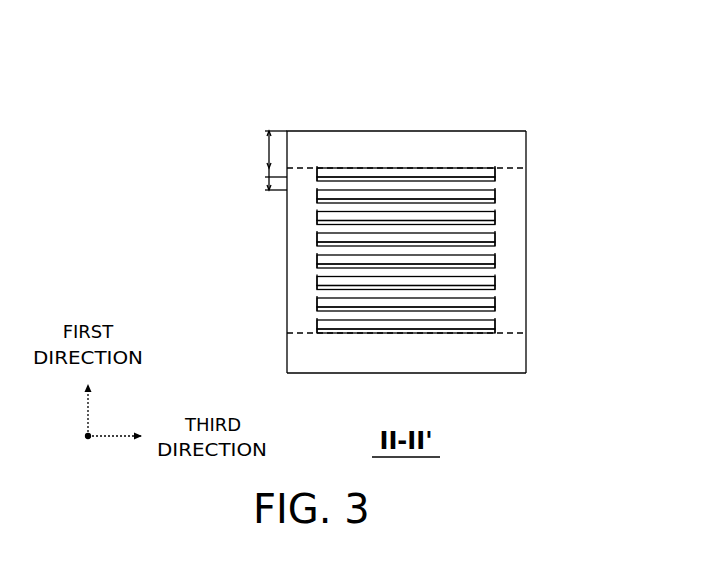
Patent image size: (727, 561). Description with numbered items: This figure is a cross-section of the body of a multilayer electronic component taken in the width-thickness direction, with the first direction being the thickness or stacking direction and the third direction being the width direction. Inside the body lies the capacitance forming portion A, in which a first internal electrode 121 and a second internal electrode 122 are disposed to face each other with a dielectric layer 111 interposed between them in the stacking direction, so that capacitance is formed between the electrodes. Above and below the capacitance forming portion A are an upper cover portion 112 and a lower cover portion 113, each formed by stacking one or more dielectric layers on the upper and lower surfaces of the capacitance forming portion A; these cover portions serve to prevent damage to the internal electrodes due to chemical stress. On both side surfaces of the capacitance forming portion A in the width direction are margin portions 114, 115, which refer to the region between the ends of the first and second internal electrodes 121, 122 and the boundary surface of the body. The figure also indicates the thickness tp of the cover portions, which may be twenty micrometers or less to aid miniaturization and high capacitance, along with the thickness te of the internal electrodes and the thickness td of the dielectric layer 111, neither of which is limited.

The upper cover portion 112 is at (413, 148).
The first internal electrode 121 is at (495, 169).
The dielectric layer 111 is at (495, 180).
The second internal electrode 122 is at (495, 193).
The margin portion 115 is at (517, 277).
The lower cover portion 113 is at (517, 352).
The margin portion 114 is at (300, 287).
The capacitance forming portion A is at (314, 255).
The thickness of the cover portions tp is at (266, 149).
The thickness of the internal electrodes te is at (266, 176).
The thickness of the dielectric layer td is at (266, 183).